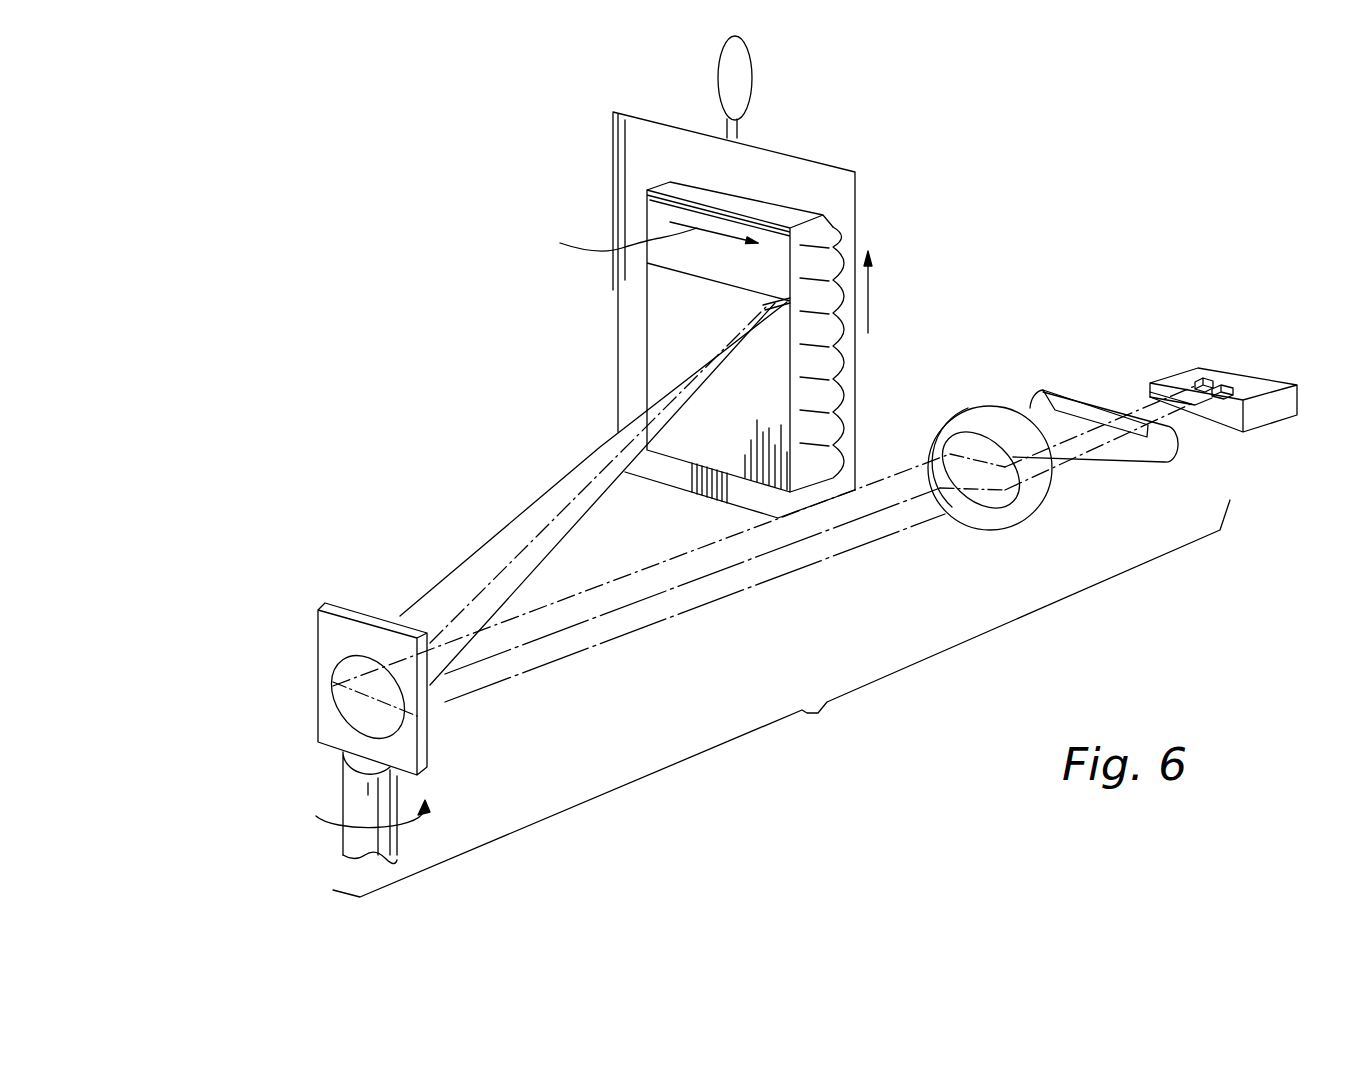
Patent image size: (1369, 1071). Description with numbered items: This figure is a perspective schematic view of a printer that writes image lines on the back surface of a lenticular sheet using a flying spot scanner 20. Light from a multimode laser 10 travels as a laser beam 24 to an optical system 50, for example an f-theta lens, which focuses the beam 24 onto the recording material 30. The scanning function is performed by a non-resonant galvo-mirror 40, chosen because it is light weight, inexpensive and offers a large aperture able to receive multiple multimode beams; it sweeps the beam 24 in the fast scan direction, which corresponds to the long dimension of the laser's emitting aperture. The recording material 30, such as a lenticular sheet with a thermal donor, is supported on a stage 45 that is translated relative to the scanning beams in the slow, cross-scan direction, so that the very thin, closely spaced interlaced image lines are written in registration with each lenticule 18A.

The multimode laser 10 is at (1192, 380).
The lenticule 18A is at (830, 233).
The flying spot scanner 20 is at (781, 641).
The laser beam 24 is at (720, 375).
The recording material 30 is at (678, 452).
The non-resonant galvo-mirror 40 is at (328, 643).
The stage 45 is at (787, 180).
The optical system 50 is at (950, 427).